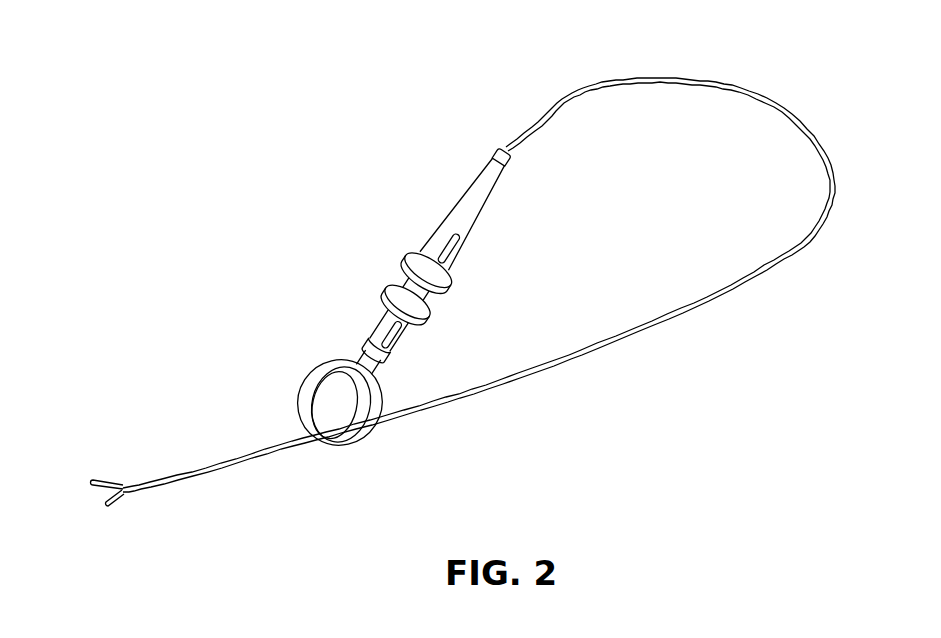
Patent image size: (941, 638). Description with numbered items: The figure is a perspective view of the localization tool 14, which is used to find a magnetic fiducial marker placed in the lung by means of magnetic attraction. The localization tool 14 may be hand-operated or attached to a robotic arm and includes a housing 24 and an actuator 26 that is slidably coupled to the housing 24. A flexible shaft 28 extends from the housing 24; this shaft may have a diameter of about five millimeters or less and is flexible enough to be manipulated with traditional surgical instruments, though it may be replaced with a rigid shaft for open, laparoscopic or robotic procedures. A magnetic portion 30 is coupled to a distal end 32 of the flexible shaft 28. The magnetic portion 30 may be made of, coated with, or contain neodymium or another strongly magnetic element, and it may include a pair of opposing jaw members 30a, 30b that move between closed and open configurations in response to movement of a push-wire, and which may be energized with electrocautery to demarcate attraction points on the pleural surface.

The localization tool 14 is at (142, 117).
The housing 24 is at (379, 328).
The actuator 26 is at (406, 268).
The flexible shaft 28 is at (838, 160).
The magnetic portion 30 is at (106, 473).
The jaw member 30a is at (111, 505).
The jaw member 30b is at (94, 479).
The distal end 32 is at (190, 466).